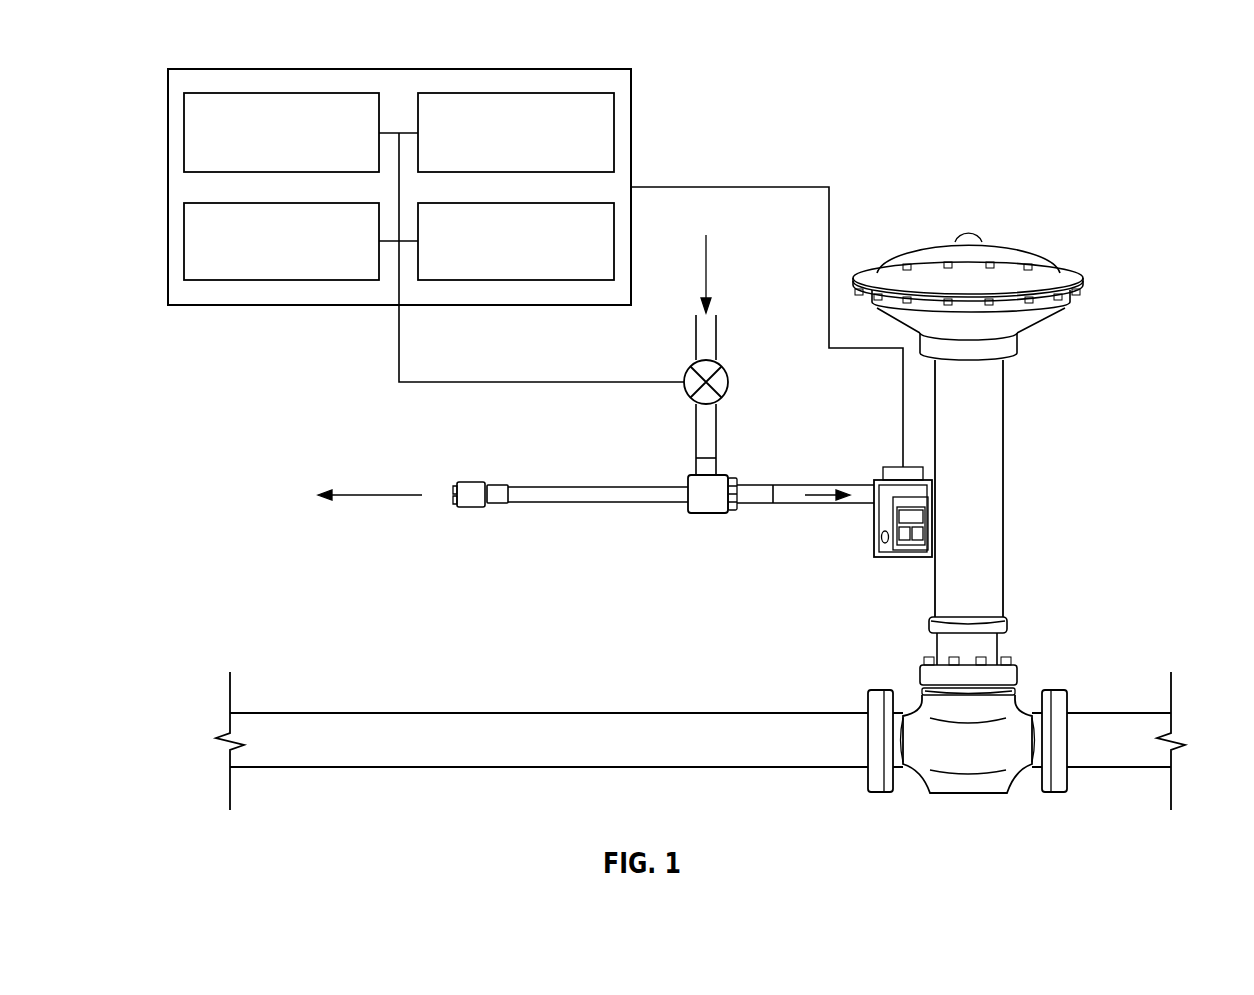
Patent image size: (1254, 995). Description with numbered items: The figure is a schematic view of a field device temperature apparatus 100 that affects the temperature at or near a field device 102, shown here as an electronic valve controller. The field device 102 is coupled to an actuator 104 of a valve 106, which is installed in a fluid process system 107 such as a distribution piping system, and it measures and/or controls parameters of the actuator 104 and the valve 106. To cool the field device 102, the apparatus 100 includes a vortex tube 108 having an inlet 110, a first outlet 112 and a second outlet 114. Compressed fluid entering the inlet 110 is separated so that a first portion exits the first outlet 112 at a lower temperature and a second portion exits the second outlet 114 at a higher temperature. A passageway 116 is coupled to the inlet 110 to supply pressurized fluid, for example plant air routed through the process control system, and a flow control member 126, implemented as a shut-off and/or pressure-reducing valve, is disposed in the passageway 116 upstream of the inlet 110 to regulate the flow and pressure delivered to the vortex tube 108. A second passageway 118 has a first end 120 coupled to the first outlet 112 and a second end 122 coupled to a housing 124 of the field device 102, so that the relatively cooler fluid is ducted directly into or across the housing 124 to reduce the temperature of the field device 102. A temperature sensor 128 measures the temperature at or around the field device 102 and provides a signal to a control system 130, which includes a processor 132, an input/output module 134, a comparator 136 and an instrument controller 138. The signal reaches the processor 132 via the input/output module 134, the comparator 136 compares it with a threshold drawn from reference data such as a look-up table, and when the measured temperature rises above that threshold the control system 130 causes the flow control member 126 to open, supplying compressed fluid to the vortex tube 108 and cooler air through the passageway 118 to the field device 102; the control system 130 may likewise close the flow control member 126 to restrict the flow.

The field device temperature apparatus 100 is at (749, 141).
The field device 102 is at (863, 502).
The actuator 104 is at (1003, 252).
The valve 106 is at (1000, 712).
The fluid process system 107 is at (700, 685).
The vortex tube 108 is at (676, 504).
The inlet 110 is at (696, 460).
The first outlet 112 is at (766, 500).
The second outlet 114 is at (458, 482).
The passageway 116 is at (717, 432).
The passageway 118 is at (835, 503).
The first end 120 is at (776, 498).
The second end 122 is at (872, 497).
The housing 124 is at (872, 535).
The flow control member 126 is at (729, 382).
The temperature sensor 128 is at (896, 466).
The control system 130 is at (497, 69).
The processor 132 is at (265, 93).
The input/output module 134 is at (285, 280).
The comparator 136 is at (615, 119).
The instrument controller 138 is at (535, 280).